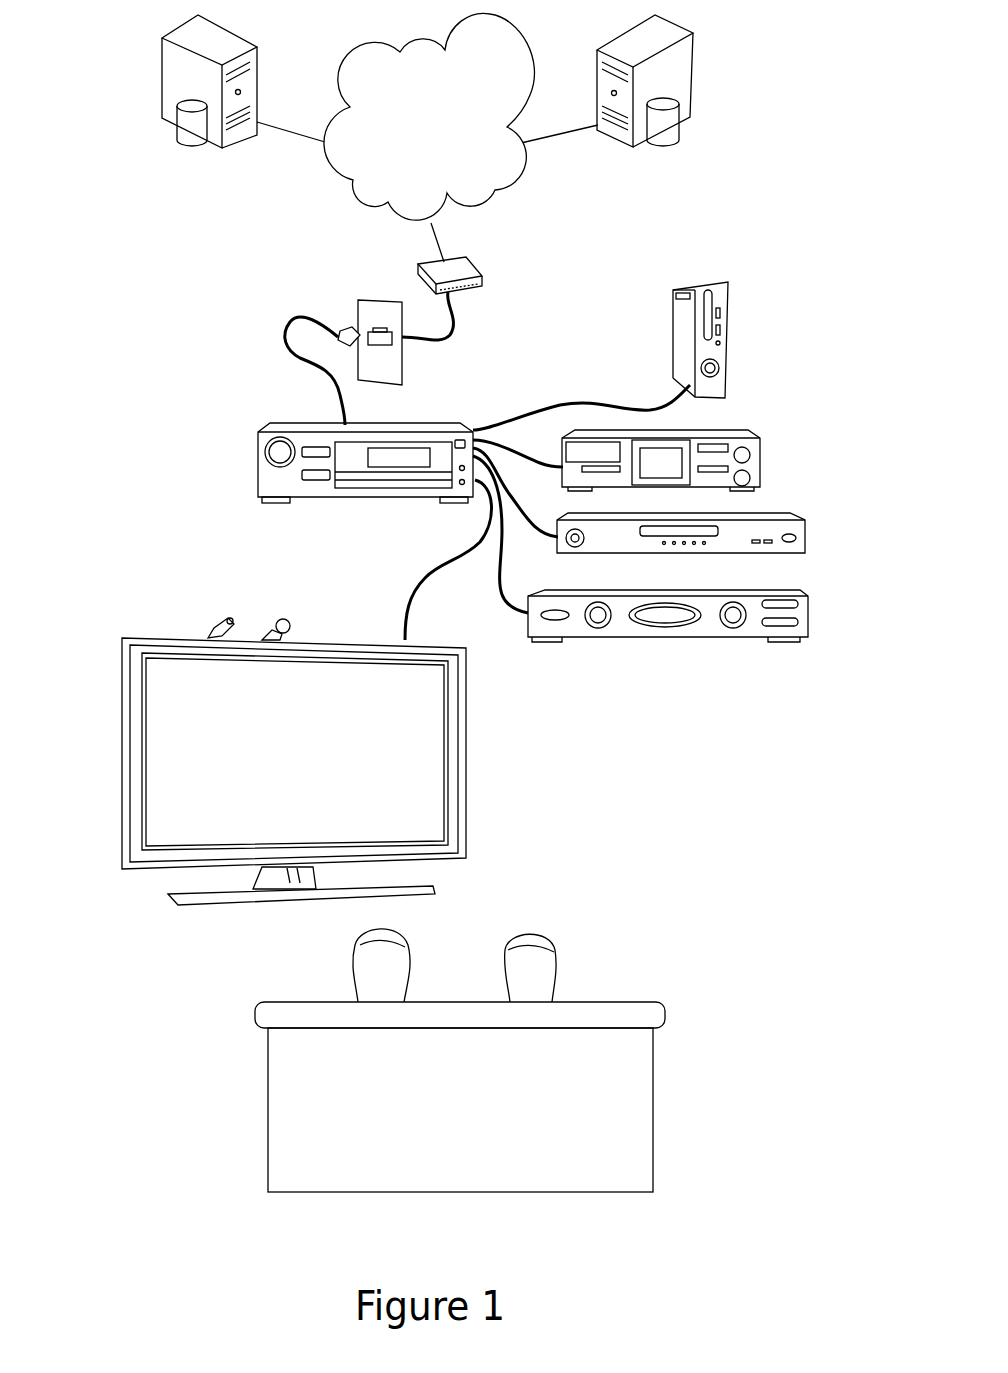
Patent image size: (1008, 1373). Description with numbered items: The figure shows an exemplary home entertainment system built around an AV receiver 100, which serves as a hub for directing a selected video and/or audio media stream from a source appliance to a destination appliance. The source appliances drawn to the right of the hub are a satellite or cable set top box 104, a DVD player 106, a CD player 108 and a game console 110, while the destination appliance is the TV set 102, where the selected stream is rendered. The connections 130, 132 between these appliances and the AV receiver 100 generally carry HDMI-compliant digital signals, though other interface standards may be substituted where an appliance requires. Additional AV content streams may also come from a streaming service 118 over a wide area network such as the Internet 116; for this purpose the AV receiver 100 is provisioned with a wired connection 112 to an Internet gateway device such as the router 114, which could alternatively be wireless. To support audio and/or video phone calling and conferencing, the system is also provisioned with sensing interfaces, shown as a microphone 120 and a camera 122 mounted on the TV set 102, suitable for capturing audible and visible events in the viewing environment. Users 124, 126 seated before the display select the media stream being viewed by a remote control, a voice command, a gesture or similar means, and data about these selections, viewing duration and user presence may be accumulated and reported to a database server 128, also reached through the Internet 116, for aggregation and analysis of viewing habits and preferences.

The AV receiver 100 is at (285, 420).
The TV set 102 is at (152, 635).
The set top box 104 is at (767, 588).
The DVD player 106 is at (782, 513).
The CD player 108 is at (742, 435).
The game console 110 is at (707, 282).
The connection 112 is at (344, 311).
The router 114 is at (466, 264).
The Internet 116 is at (361, 198).
The streaming service 118 is at (232, 33).
The microphone 120 is at (228, 622).
The camera 122 is at (277, 616).
The user 124 is at (357, 935).
The user 126 is at (545, 935).
The database server 128 is at (624, 152).
The connection 130 is at (497, 425).
The connection 132 is at (445, 562).